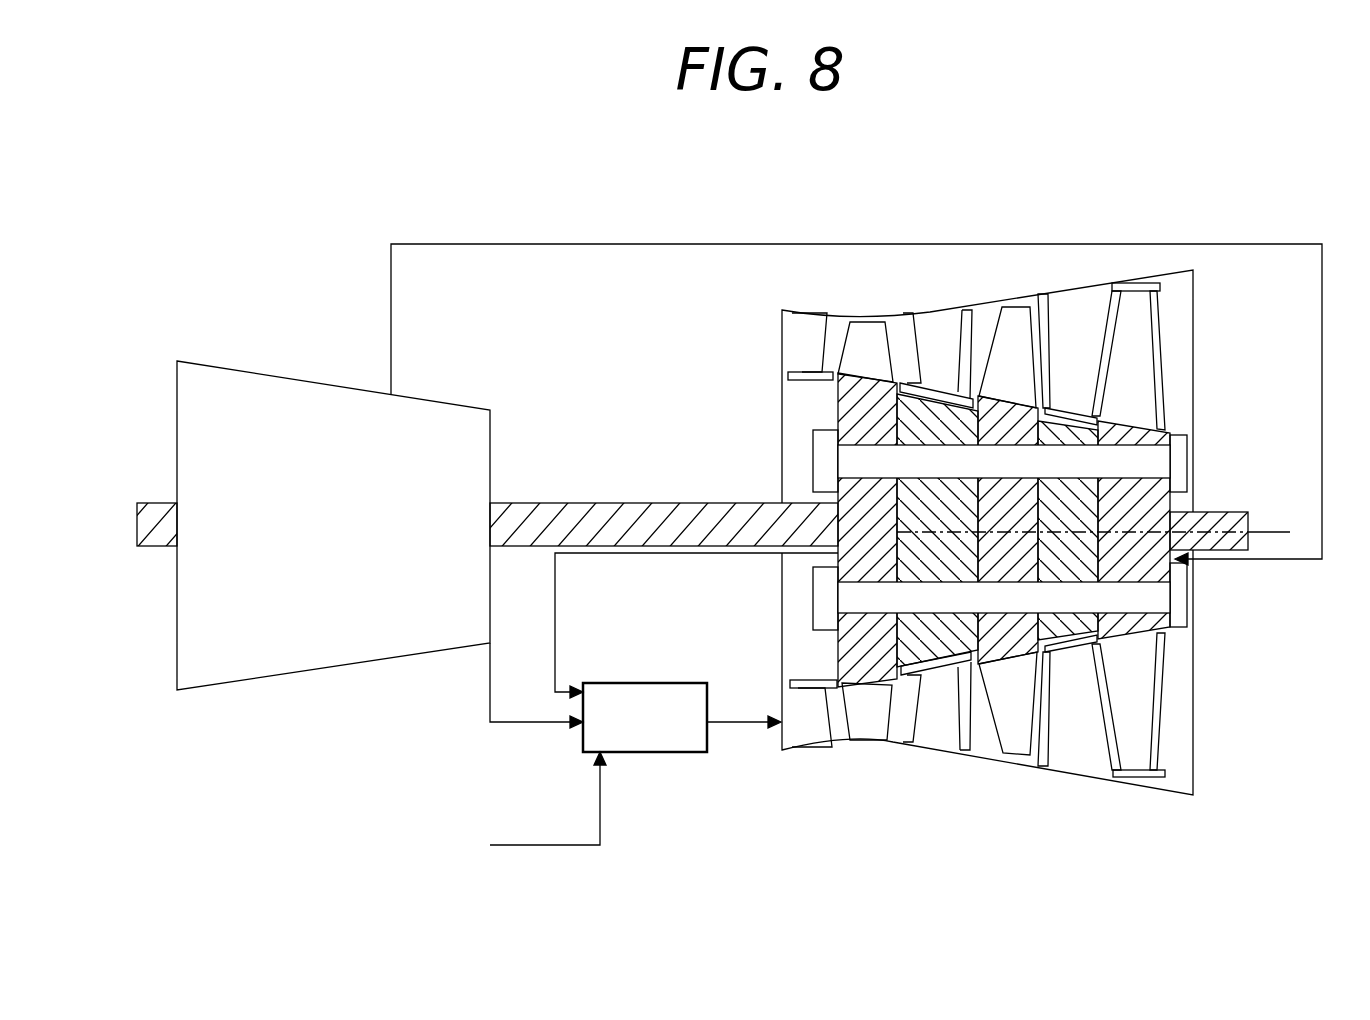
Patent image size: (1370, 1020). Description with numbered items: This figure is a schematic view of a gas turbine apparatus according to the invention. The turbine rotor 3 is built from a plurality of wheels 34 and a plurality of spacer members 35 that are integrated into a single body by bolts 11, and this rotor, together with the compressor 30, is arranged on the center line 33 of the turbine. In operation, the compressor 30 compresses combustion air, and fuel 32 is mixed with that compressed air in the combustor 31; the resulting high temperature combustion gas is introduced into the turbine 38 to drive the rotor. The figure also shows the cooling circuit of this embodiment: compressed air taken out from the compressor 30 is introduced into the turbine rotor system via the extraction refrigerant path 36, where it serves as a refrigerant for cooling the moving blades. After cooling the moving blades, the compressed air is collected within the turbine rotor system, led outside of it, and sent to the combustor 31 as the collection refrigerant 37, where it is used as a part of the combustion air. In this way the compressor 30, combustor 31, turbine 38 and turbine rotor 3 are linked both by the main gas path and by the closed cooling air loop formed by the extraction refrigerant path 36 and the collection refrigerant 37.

The turbine rotor 3 is at (858, 407).
The bolts 11 is at (860, 597).
The compressor 30 is at (276, 403).
The combustor 31 is at (653, 728).
The fuel 32 is at (524, 807).
The center line 33 is at (1275, 530).
The wheels 34 is at (1127, 617).
The spacer members 35 is at (1077, 437).
The extraction refrigerant path 36 is at (660, 245).
The collection refrigerant 37 is at (555, 618).
The turbine 38 is at (1198, 684).